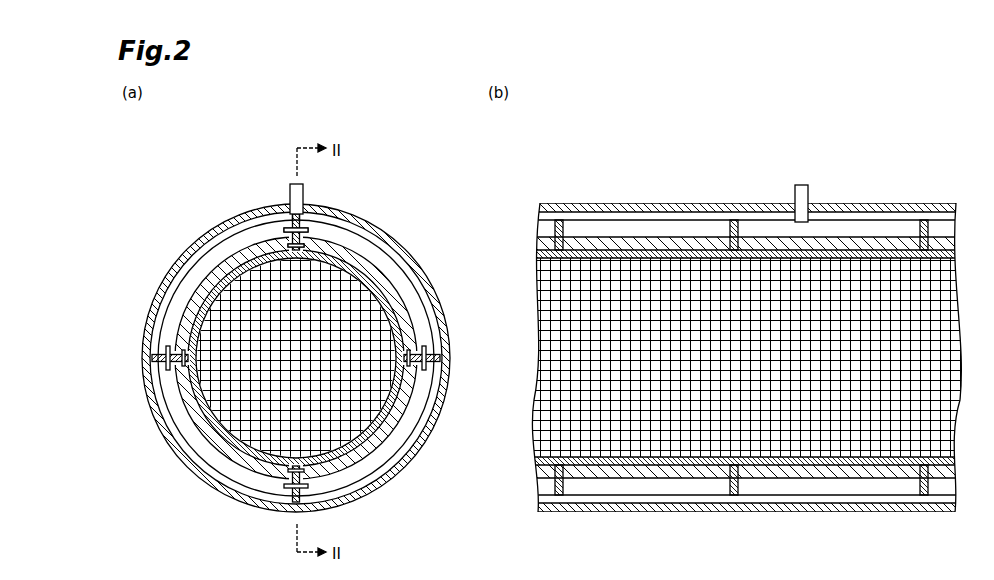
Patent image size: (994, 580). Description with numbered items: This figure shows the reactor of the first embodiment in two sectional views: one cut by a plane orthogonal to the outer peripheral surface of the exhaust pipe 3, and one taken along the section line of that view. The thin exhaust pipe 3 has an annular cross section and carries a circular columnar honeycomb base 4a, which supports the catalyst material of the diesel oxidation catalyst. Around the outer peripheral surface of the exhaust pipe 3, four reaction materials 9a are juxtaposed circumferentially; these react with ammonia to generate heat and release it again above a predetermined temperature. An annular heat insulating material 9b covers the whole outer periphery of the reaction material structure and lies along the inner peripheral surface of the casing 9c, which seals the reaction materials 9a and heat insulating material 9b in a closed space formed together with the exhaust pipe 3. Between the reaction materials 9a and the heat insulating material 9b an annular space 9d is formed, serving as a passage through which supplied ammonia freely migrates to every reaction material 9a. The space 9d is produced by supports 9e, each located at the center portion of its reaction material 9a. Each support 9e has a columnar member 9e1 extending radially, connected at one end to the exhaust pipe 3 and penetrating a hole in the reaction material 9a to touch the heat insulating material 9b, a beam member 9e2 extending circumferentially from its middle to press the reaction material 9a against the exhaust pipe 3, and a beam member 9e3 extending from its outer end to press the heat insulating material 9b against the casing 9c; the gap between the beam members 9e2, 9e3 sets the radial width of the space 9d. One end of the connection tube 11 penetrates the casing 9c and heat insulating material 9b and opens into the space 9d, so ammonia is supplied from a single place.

The exhaust pipe 3 is at (270, 463).
The honeycomb base 4a is at (230, 422).
The reaction material 9a is at (240, 262).
The heat insulating material 9b is at (160, 302).
The casing 9c is at (172, 268).
The space 9d is at (167, 325).
The support 9e is at (264, 214).
The columnar member 9e1 is at (317, 226).
The beam member 9e2 is at (310, 238).
The beam member 9e3 is at (338, 210).
The connection tube 11 is at (304, 196).